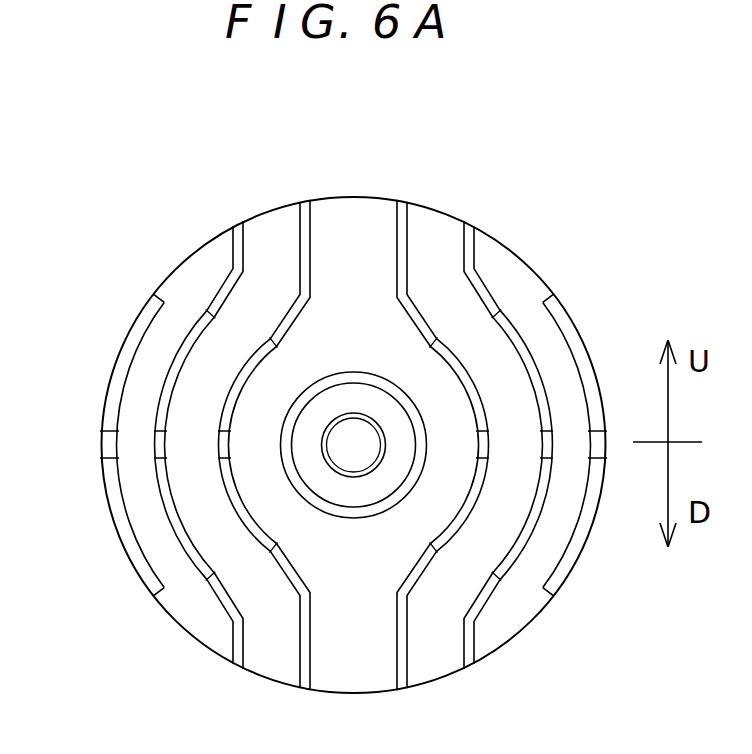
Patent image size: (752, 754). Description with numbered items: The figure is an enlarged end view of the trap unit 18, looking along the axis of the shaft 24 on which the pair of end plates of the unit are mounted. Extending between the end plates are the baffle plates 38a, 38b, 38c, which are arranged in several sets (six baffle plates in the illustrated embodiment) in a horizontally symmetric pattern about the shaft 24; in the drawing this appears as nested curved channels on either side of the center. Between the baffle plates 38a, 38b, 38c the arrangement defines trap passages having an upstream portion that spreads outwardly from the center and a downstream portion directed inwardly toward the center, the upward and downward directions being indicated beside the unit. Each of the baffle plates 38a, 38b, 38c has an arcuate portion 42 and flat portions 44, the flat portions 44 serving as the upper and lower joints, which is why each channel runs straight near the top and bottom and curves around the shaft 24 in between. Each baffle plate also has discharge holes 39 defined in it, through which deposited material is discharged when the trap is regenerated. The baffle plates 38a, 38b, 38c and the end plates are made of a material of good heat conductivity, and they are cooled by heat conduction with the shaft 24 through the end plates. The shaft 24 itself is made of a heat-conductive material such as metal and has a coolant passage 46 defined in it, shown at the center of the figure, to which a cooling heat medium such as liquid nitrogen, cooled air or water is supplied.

The trap unit 18 is at (512, 140).
The shaft 24 is at (363, 377).
The coolant passage 46 is at (308, 470).
The flat portions 44 is at (303, 252).
The arcuate portion 42 is at (242, 377).
The discharge holes 39 is at (100, 437).
The baffle plate 38a is at (462, 375).
The baffle plate 38b is at (540, 385).
The baffle plate 38c is at (570, 556).